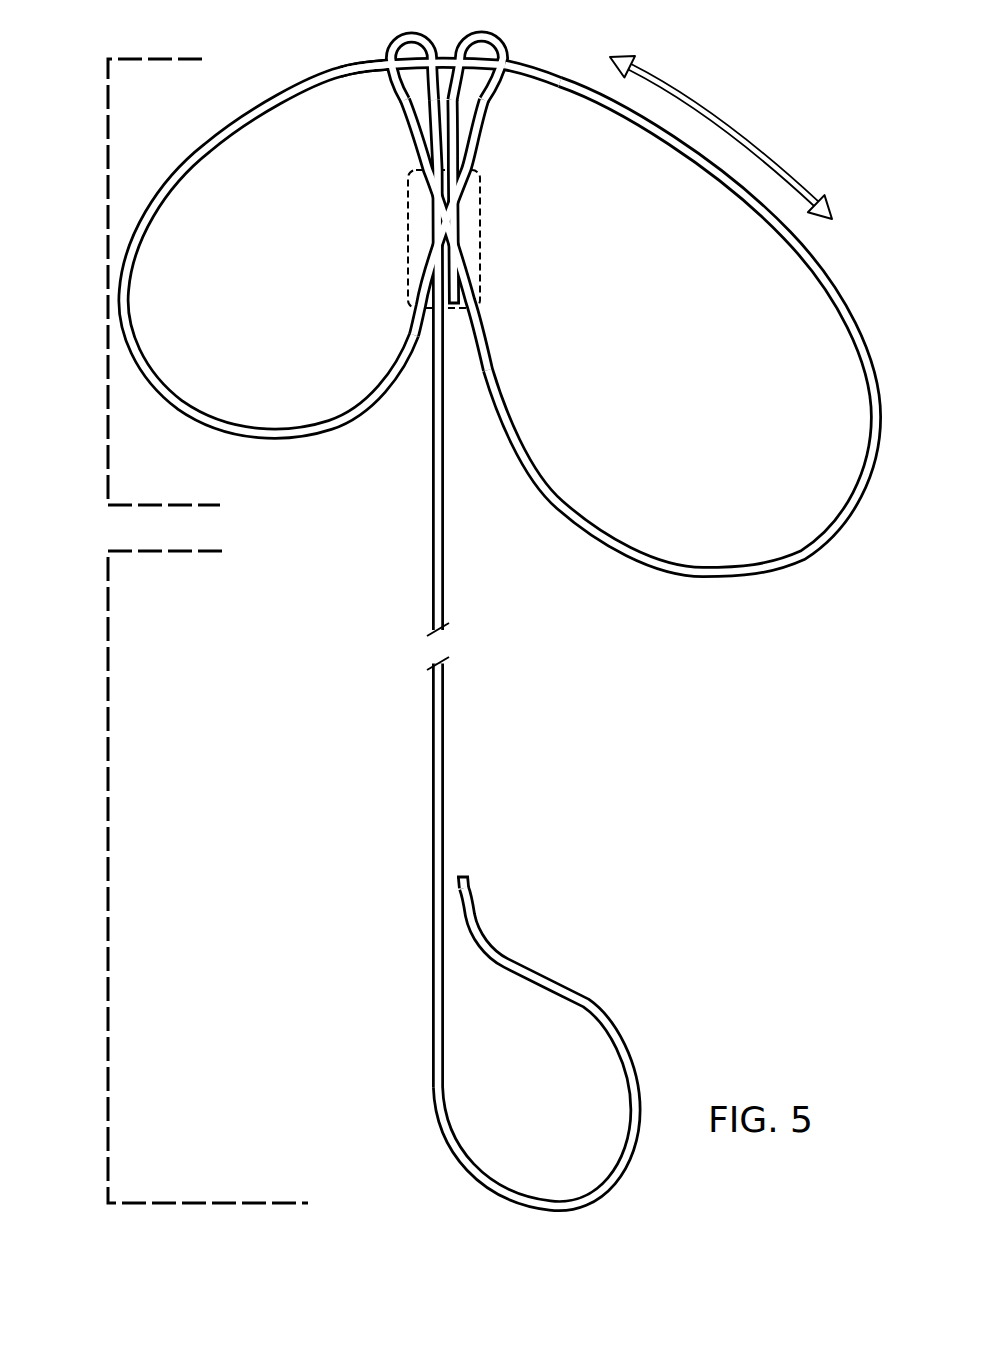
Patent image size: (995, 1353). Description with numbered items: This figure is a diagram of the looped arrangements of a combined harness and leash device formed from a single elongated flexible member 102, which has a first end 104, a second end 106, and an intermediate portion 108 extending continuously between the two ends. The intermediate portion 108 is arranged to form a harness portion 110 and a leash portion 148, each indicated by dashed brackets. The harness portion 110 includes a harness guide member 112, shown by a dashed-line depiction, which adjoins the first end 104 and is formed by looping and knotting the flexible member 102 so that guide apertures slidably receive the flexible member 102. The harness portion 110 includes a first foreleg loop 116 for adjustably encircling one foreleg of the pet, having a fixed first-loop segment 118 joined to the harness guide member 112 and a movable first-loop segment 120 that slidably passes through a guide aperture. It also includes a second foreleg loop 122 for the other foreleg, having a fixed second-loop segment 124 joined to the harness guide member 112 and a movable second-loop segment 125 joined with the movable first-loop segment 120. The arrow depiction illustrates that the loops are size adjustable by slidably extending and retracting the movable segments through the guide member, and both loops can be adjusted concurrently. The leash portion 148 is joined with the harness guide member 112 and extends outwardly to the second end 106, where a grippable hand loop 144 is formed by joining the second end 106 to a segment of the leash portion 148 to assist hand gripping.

The elongated flexible member 102 is at (505, 614).
The first end 104 is at (458, 292).
The second end 106 is at (470, 877).
The intermediate portion 108 is at (470, 708).
The harness portion 110 is at (152, 59).
The harness guide member 112 is at (480, 197).
The first foreleg loop 116 is at (215, 130).
The fixed first-loop segment 118 is at (407, 341).
The movable first-loop segment 120 is at (371, 74).
The second foreleg loop 122 is at (817, 258).
The fixed second-loop segment 124 is at (484, 346).
The movable second-loop segment 125 is at (517, 81).
The grippable hand loop 144 is at (578, 1038).
The leash portion 148 is at (145, 552).